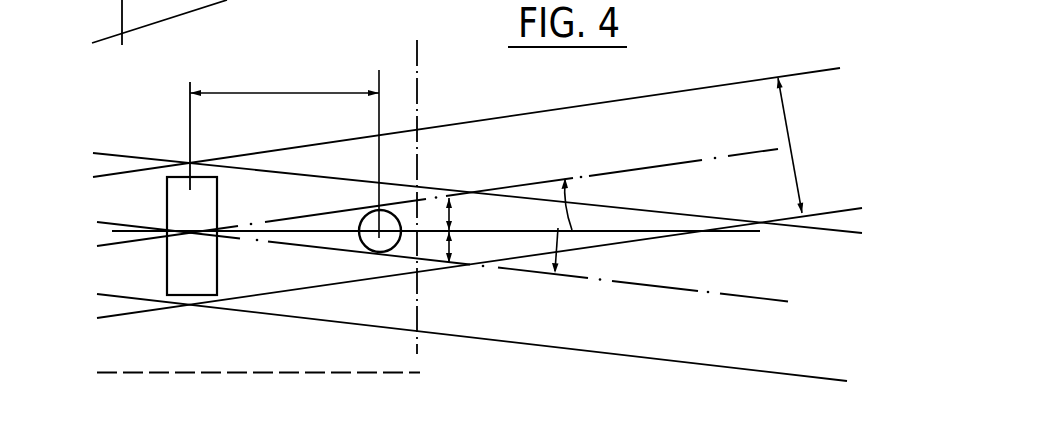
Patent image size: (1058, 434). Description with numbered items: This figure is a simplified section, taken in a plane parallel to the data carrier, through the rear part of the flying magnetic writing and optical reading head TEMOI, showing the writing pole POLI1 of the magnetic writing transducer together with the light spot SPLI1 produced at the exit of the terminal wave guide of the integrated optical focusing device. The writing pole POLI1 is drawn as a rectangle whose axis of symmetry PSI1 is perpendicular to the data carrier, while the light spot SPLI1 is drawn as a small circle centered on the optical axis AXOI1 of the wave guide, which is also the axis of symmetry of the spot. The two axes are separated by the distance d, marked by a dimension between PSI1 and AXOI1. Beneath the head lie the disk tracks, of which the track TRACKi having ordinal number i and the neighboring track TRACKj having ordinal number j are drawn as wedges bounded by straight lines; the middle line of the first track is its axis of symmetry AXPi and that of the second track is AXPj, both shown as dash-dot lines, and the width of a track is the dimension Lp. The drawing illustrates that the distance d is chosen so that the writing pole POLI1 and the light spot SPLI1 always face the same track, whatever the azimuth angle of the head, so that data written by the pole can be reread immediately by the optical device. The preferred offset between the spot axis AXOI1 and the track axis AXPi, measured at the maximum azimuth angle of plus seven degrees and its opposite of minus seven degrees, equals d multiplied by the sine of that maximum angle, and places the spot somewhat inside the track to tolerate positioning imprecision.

The axis of symmetry of the writing pole PSI1 is at (190, 124).
The writing pole POLI1 is at (190, 305).
The optical axis of the wave guide AXOI1 is at (380, 229).
The light spot SPLI1 is at (372, 257).
The flying magnetic writing and optical reading head TEMOI is at (268, 374).
The track of ordinal number i TRACKi is at (490, 121).
The track of ordinal number j TRACKj is at (540, 322).
The axis of symmetry of track i AXPi is at (663, 164).
The axis of symmetry of track j AXPj is at (633, 285).
The distance between optical axis and pole axis d is at (284, 154).
The track width Lp is at (797, 145).